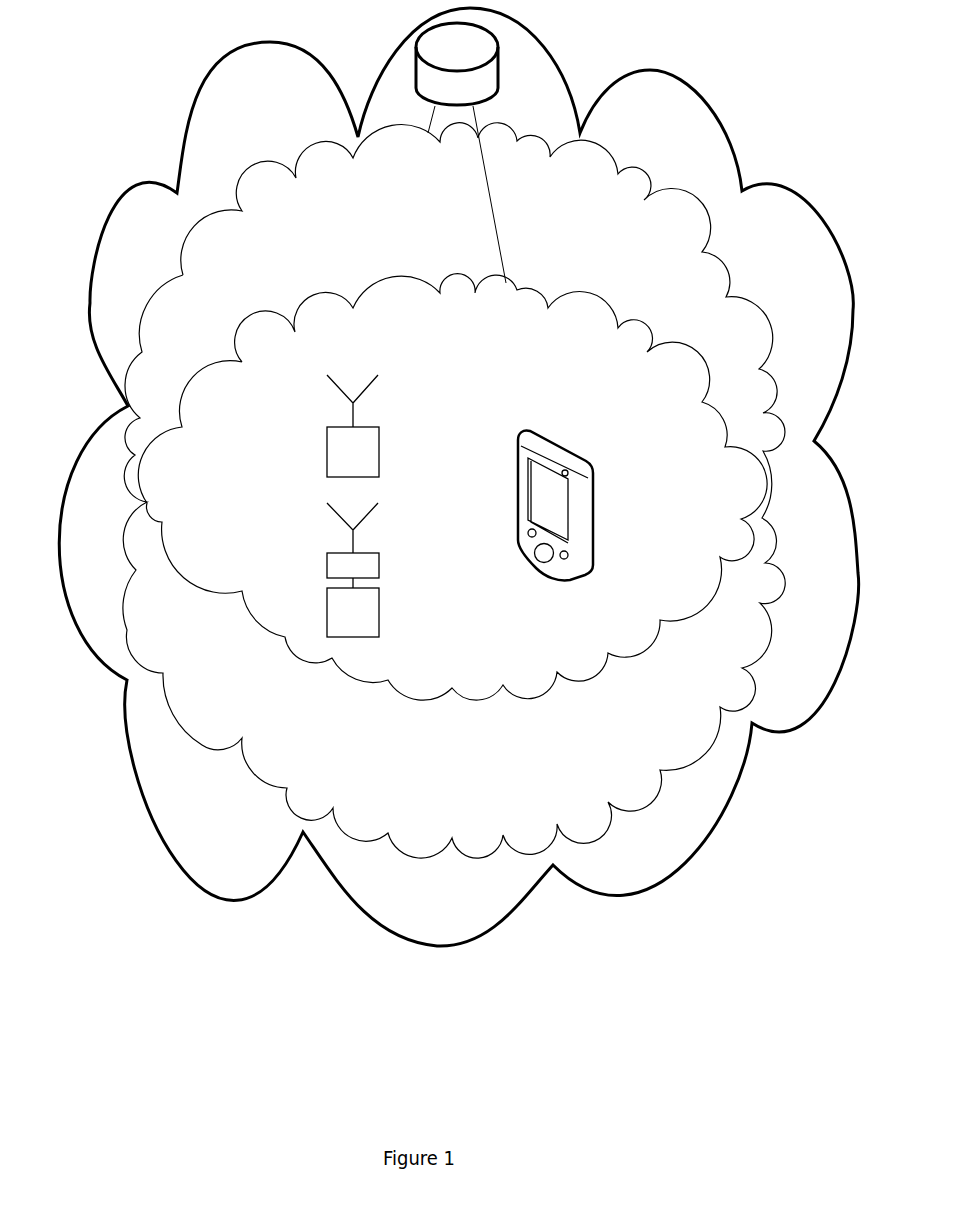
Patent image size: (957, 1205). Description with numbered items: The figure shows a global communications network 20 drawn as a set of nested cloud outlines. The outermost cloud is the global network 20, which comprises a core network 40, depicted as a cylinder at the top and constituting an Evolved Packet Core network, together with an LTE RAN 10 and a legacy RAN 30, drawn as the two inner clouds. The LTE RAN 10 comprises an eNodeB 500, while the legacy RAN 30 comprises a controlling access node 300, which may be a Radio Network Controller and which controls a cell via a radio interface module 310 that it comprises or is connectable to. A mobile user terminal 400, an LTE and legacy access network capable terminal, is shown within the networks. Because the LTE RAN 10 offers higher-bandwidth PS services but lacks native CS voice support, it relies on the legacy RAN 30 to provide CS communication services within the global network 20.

The global communications network 20 is at (710, 107).
The LTE RAN 10 is at (417, 130).
The legacy RAN 30 is at (202, 745).
The core network 40 is at (380, 80).
The eNodeB 500 is at (327, 453).
The radio interface module 310 is at (327, 578).
The controlling access node 300 is at (379, 613).
The mobile user terminal 400 is at (512, 477).